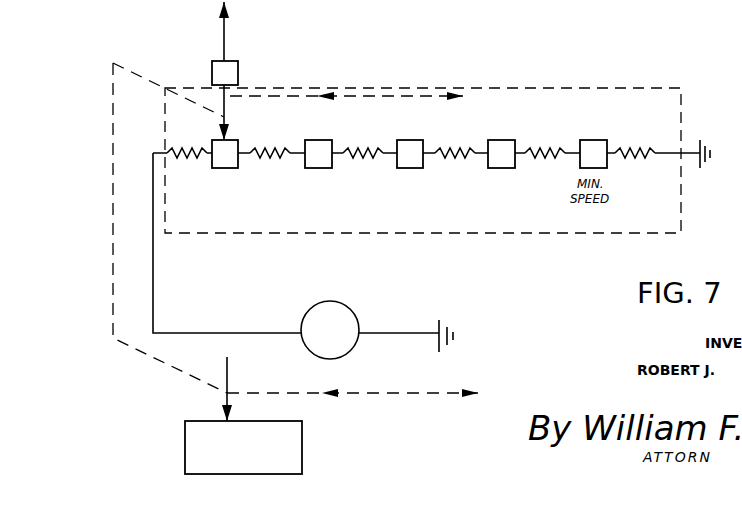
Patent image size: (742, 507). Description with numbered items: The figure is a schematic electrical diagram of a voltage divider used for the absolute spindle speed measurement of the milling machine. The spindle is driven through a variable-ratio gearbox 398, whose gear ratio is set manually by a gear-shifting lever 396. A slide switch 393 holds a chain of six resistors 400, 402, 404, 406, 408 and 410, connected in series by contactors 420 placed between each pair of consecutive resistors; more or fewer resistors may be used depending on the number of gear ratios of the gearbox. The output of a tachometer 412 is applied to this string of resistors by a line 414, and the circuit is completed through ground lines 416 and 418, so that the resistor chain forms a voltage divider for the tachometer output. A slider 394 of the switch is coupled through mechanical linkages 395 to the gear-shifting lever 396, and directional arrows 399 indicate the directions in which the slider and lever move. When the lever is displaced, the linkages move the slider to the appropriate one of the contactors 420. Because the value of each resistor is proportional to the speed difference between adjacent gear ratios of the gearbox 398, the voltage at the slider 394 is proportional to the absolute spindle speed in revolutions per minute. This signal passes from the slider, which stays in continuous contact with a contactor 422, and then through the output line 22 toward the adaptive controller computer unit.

The output line 22 is at (226, 24).
The slide switch 393 is at (681, 92).
The slider 394 is at (224, 106).
The mechanical linkages 395 is at (113, 63).
The gear-shifting lever 396 is at (227, 370).
The variable-ratio gearbox 398 is at (302, 447).
The directional arrows 399 is at (388, 393).
The resistor 400 is at (203, 172).
The resistor 402 is at (273, 160).
The resistor 404 is at (366, 160).
The resistor 406 is at (455, 160).
The resistor 408 is at (541, 160).
The resistor 410 is at (640, 158).
The tachometer 412 is at (343, 305).
The line 414 is at (153, 283).
The ground line 416 is at (383, 333).
The ground line 418 is at (700, 160).
The contactors 420 is at (232, 148).
The contactor 422 is at (238, 73).